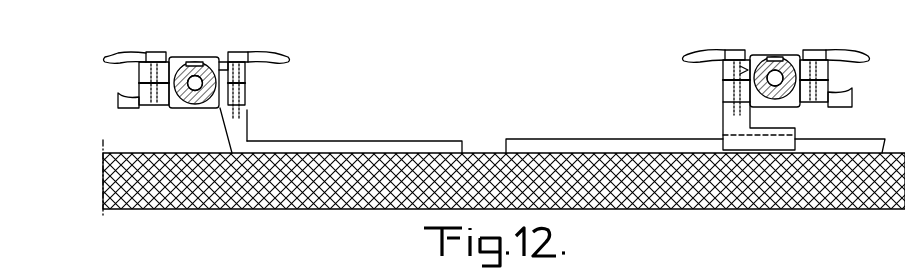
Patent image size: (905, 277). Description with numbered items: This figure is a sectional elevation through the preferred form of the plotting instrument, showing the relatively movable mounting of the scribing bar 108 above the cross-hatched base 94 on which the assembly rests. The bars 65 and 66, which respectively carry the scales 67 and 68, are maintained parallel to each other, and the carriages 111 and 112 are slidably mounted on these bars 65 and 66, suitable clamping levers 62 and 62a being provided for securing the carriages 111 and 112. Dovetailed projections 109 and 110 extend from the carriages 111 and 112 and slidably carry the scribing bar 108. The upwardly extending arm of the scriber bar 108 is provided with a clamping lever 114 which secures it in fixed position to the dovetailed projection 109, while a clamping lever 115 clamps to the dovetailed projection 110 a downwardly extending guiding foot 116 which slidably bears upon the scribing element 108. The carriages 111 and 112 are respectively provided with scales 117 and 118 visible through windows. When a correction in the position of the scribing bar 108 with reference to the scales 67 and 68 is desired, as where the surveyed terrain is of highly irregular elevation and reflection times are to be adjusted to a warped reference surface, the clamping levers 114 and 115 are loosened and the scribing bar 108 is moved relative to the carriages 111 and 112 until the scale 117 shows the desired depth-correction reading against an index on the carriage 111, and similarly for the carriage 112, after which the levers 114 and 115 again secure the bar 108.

The clamping lever 62 is at (112, 56).
The clamping lever 62a is at (858, 52).
The bar 65 is at (189, 93).
The bar 66 is at (796, 88).
The scale 67 is at (197, 64).
The scale 68 is at (774, 60).
The base slab 94 is at (110, 172).
The scribing bar 108 is at (360, 145).
The dovetailed projection 109 is at (232, 99).
The dovetailed projection 110 is at (746, 70).
The carriage 111 is at (178, 62).
The carriage 112 is at (793, 58).
The clamping lever 114 is at (278, 52).
The clamping lever 115 is at (690, 52).
The guiding foot 116 is at (735, 122).
The scale 117 is at (238, 60).
The scale 118 is at (735, 62).